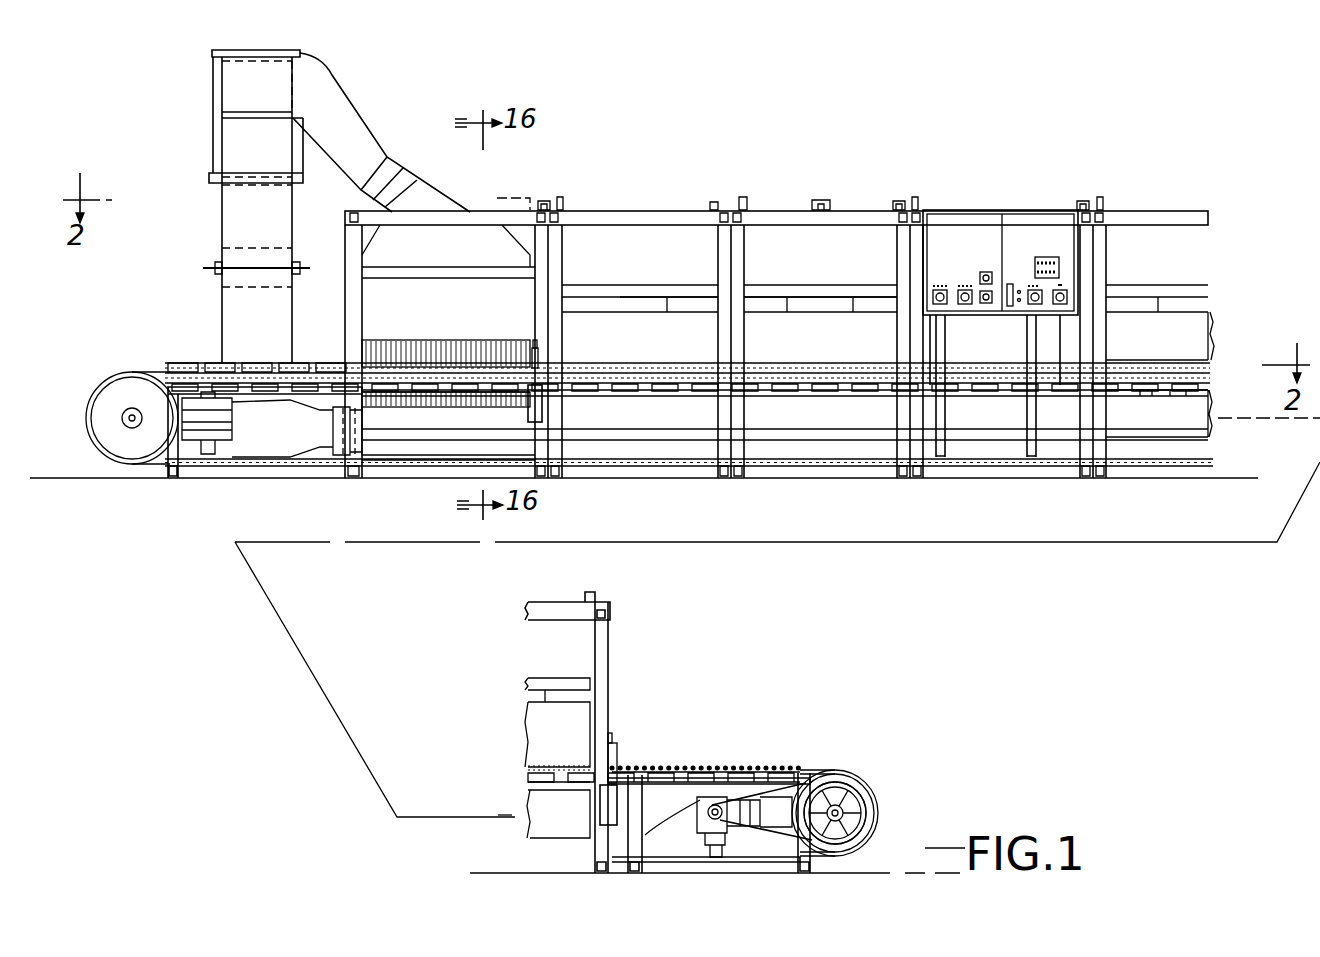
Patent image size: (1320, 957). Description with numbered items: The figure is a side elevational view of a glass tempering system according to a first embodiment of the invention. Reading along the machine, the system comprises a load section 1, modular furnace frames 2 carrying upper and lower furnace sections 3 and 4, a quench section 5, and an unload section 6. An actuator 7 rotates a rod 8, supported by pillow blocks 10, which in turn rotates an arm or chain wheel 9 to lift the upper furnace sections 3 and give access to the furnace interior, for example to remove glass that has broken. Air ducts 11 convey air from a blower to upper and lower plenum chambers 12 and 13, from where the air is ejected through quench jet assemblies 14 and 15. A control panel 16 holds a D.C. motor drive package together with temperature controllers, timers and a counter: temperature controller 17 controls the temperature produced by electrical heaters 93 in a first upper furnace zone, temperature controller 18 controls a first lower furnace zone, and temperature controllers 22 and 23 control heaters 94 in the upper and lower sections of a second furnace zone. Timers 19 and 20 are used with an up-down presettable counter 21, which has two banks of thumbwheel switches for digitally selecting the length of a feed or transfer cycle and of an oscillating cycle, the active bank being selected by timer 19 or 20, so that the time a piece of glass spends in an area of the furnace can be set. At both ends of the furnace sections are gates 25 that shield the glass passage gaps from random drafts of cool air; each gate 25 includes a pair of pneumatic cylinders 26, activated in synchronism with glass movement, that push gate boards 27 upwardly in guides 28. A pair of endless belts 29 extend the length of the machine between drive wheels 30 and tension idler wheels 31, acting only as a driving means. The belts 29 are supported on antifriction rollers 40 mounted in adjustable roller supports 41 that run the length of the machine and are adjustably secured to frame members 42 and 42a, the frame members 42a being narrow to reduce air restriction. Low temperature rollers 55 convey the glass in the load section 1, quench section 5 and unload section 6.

The load section 1 is at (735, 763).
The modular furnace frames 2 is at (650, 211).
The upper furnace sections 3 is at (645, 304).
The lower furnace sections 4 is at (640, 428).
The quench section 5 is at (486, 192).
The unload section 6 is at (178, 276).
The actuator 7 is at (822, 199).
The rod 8 is at (1018, 209).
The arm or chain wheel 9 is at (561, 197).
The pillow blocks 10 is at (545, 200).
The air ducts 11 is at (360, 130).
The upper plenum chamber 12 is at (372, 308).
The lower plenum chamber 13 is at (398, 455).
The upper quench jet assembly 14 is at (370, 355).
The lower quench jet assembly 15 is at (430, 397).
The control panel 16 is at (960, 225).
The temperature controller 17 is at (940, 289).
The temperature controller 18 is at (966, 289).
The timer 19 is at (990, 292).
The timer 20 is at (990, 272).
The up-down presettable counter 21 is at (1045, 257).
The temperature controller 22 is at (1035, 305).
The temperature controller 23 is at (1068, 297).
The gates 25 is at (512, 418).
The pneumatic cylinders 26 is at (545, 404).
The gate boards 27 is at (539, 345).
The guides 28 is at (540, 358).
The endless belts 29 is at (843, 778).
The drive wheels 30 is at (878, 812).
The tension idler wheels 31 is at (122, 390).
The antifriction rollers 40 is at (1186, 390).
The adjustable roller supports 41 is at (1168, 390).
The frame members 42 is at (1135, 389).
The frame members 42a is at (476, 389).
The low temperature rollers 55 is at (456, 362).
The electrical heaters 93 is at (880, 306).
The heaters 94 is at (700, 306).